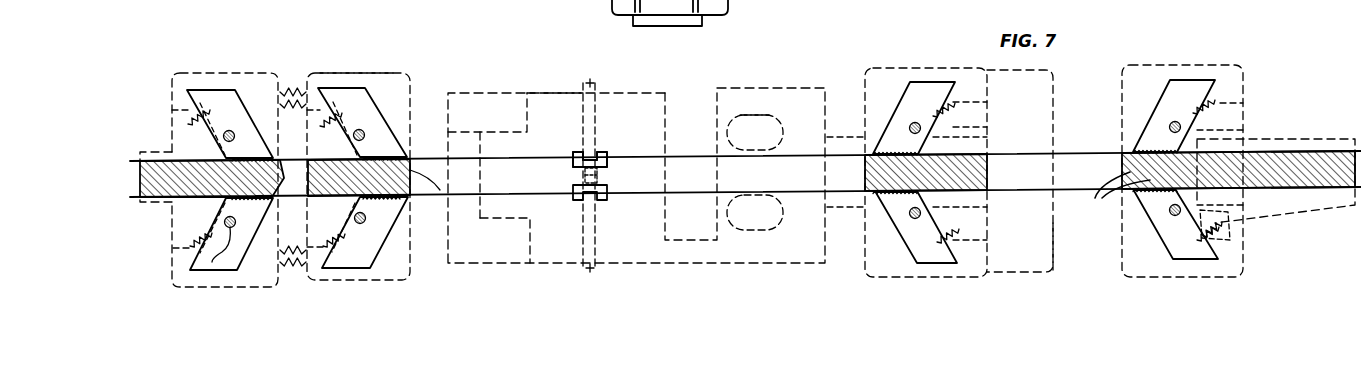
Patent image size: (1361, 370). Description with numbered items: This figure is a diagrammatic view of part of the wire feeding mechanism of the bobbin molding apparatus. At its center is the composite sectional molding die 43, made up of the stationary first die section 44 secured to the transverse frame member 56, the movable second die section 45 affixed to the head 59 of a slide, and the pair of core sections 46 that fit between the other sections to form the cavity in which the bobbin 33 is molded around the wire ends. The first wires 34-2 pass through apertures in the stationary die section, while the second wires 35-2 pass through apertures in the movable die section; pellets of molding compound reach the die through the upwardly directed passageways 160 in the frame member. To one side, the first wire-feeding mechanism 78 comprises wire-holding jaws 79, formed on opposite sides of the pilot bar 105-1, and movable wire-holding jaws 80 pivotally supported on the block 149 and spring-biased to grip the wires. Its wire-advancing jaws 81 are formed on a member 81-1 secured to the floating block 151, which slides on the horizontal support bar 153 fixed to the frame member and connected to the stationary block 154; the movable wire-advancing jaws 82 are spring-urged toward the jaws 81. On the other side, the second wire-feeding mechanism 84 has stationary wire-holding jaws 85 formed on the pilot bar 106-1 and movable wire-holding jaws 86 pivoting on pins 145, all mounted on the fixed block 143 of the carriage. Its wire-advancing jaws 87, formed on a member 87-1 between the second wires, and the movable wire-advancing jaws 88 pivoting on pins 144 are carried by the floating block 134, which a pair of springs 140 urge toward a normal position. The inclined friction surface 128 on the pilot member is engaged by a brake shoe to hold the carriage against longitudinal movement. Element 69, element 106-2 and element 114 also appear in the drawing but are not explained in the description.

The bobbin 33 is at (576, 166).
The first wires 34-2 is at (632, 160).
The second wires 35-2 is at (472, 160).
The composite sectional molding die 43 is at (609, 85).
The stationary first die section 44 is at (665, 97).
The second die section 45 is at (547, 93).
The core sections 46 is at (653, 28).
The transverse frame member 56 is at (750, 88).
The head of slide 59 is at (472, 93).
The housing fragment 69 is at (647, 8).
The first wire-feeding mechanism 78 is at (1058, 224).
The wire-holding jaws 79 is at (1116, 196).
The movable wire-holding jaws 80 is at (1173, 92).
The wire-advancing jaws 81 is at (885, 185).
The member 81-1 is at (876, 187).
The movable wire-advancing jaws 82 is at (892, 127).
The second wire-feeding mechanism 84 is at (305, 72).
The stationary wire-holding jaws 85 is at (282, 163).
The movable wire-holding jaws 86 is at (236, 105).
The wire-advancing jaws 87 is at (410, 160).
The member 87-1 is at (496, 240).
The movable wire-advancing jaws 88 is at (363, 131).
The pilot bar 105-1 is at (1285, 152).
The pilot bar 106-1 is at (200, 200).
The upper housing portion 106-2 is at (157, 160).
The housing fragment 114 is at (433, 9).
The inclined friction surface 128 is at (1285, 218).
The floating block 134 is at (342, 73).
The springs 140 is at (318, 80).
The fixed block 143 is at (195, 73).
The pins 144 is at (385, 112).
The pins 145 is at (228, 130).
The block 149 is at (1195, 64).
The floating block 151 is at (912, 66).
The horizontal support bar 153 is at (845, 137).
The stationary block 154 is at (1002, 70).
The upwardly directed passageways 160 is at (763, 116).